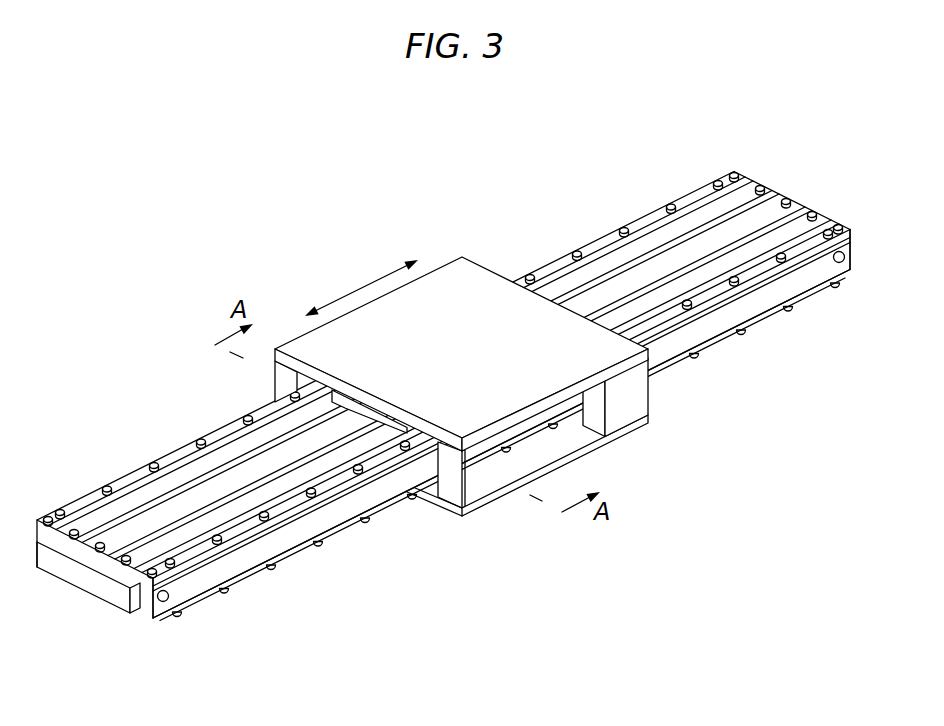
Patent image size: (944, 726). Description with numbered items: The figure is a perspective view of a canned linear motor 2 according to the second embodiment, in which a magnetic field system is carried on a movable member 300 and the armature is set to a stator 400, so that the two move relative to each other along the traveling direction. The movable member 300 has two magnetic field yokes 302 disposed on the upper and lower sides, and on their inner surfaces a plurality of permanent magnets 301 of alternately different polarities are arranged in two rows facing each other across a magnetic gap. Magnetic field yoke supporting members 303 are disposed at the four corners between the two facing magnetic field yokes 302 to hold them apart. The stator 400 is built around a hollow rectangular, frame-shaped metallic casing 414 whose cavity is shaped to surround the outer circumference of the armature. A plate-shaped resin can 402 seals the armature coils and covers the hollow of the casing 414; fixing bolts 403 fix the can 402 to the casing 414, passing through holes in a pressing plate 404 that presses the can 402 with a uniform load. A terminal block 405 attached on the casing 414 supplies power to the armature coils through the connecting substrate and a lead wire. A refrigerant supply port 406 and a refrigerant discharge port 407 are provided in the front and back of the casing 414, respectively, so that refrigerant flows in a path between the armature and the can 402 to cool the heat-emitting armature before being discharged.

The canned linear motor 2 is at (634, 183).
The movable member 300 is at (288, 324).
The permanent magnet 301 is at (258, 379).
The magnetic field yoke 302 is at (447, 318).
The magnetic field yoke supporting member 303 is at (633, 434).
The stator 400 is at (120, 466).
The can 402 is at (372, 517).
The fixing bolt 403 is at (707, 278).
The pressing plate 404 is at (260, 570).
The terminal block 405 is at (100, 598).
The refrigerant supply port 406 is at (182, 618).
The refrigerant discharge port 407 is at (847, 283).
The casing 414 is at (415, 493).